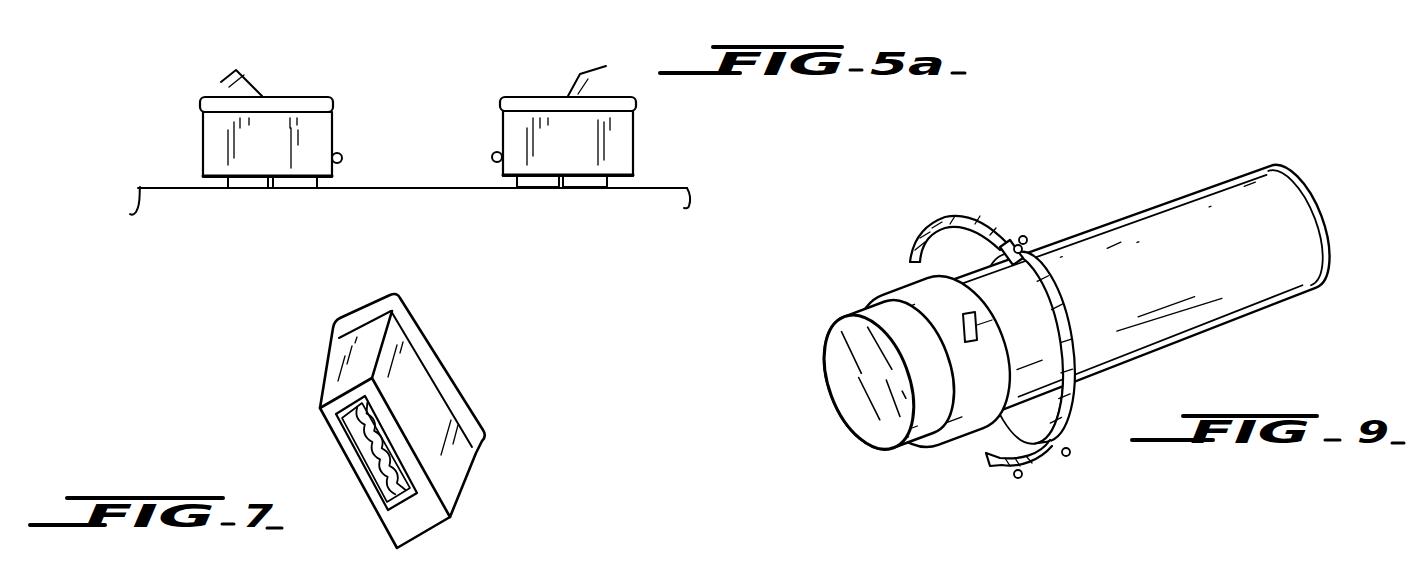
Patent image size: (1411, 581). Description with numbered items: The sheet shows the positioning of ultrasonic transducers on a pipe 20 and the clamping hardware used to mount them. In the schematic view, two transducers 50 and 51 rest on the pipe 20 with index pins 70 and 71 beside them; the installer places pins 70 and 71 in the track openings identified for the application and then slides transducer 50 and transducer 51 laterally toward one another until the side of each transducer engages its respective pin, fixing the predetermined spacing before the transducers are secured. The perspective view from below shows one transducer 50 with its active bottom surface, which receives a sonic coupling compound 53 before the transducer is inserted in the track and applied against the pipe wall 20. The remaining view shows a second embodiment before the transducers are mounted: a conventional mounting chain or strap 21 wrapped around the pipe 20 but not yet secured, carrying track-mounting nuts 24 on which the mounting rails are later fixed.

In FIG. 5a, the pipe 20 is at (153, 201).
In FIG. 9, the pipe 20 is at (1203, 283).
In FIG. 9, the mounting chain or strap 21 is at (1063, 328).
In FIG. 9, the track-mounting nut 24 is at (1028, 236).
In FIG. 5a, the transducer 50 is at (203, 147).
In FIG. 7, the transducer 50 is at (416, 419).
In FIG. 5a, the transducer 51 is at (640, 140).
In FIG. 7, the sonic coupling compound 53 is at (360, 432).
In FIG. 5a, the index pin 70 is at (343, 158).
In FIG. 5a, the index pin 71 is at (492, 156).